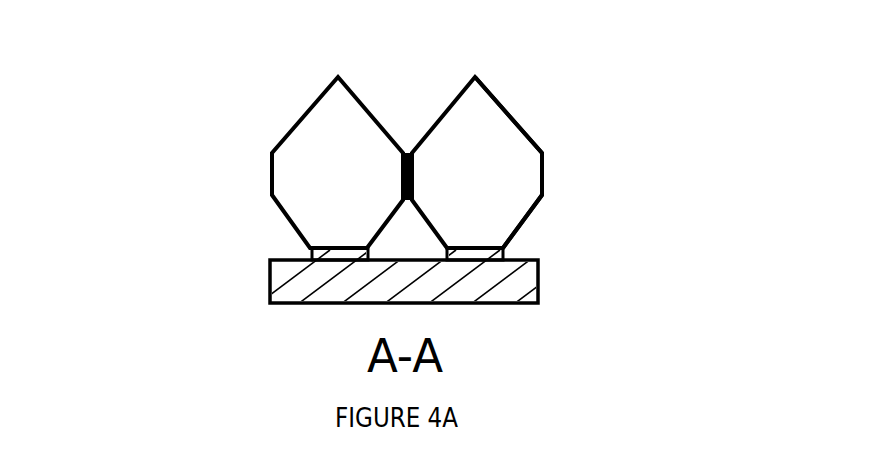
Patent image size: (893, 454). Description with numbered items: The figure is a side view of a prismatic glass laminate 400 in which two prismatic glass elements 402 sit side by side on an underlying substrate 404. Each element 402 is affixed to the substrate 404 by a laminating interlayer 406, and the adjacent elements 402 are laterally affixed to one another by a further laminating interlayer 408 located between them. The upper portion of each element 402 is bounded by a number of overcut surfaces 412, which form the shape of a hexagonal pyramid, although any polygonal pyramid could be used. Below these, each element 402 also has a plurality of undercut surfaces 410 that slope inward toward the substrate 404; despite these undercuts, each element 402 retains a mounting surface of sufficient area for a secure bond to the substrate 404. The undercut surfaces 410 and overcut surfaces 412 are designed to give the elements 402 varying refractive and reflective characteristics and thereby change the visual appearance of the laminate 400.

The prismatic glass laminate 400 is at (124, 69).
The prismatic glass element 402 is at (543, 149).
The substrate 404 is at (541, 278).
The laminating interlayer 406 is at (313, 257).
The laminating interlayer 408 is at (410, 151).
The undercut surface 410 is at (522, 224).
The overcut surface 412 is at (512, 110).